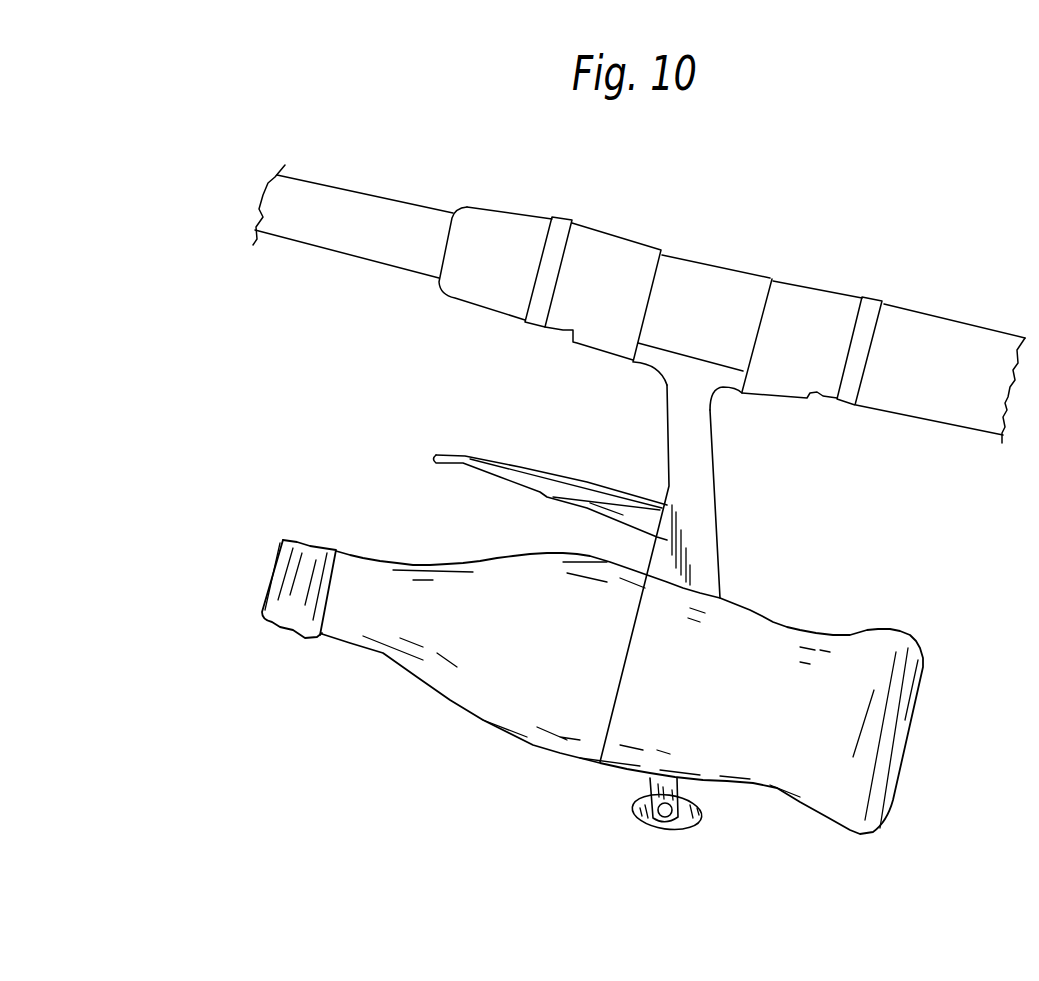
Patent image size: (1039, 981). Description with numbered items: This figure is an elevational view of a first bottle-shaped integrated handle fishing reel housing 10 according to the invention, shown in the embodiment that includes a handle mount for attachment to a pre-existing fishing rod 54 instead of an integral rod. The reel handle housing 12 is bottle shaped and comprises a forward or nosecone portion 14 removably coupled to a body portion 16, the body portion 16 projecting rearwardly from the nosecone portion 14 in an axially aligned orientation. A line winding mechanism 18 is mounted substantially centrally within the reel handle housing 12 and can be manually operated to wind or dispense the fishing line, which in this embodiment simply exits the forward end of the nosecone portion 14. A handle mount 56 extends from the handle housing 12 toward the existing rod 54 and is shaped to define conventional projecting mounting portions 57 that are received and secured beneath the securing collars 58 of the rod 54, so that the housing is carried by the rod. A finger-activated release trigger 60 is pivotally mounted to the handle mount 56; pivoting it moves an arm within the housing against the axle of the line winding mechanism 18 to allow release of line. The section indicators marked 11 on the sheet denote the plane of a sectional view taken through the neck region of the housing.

The integrated handle fishing reel housing 10 is at (601, 458).
The section line 11- 11 is at (237, 538).
The reel handle housing 12 is at (862, 619).
The forward or nosecone portion 14 is at (424, 681).
The body portion 16 is at (755, 785).
The line winding mechanism 18 is at (632, 823).
The pre-existing fishing rod 54 is at (697, 260).
The handle mount 56 is at (710, 466).
The projecting mounting portions 57 is at (647, 363).
The securing collars 58 is at (597, 230).
The finger-activated release trigger 60 is at (492, 456).